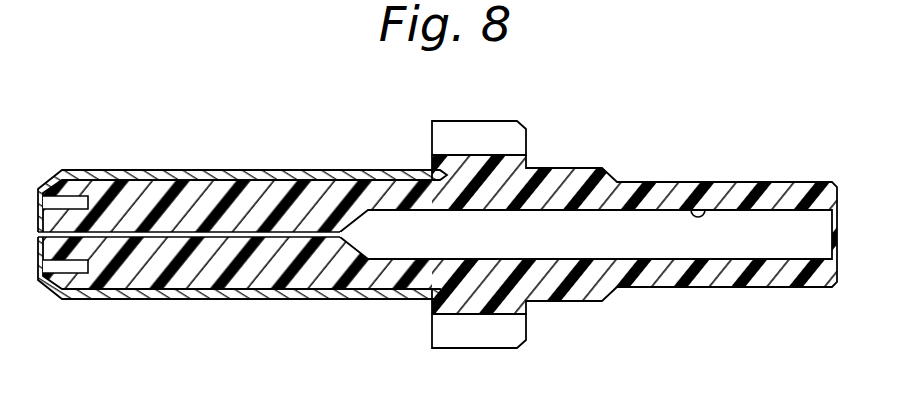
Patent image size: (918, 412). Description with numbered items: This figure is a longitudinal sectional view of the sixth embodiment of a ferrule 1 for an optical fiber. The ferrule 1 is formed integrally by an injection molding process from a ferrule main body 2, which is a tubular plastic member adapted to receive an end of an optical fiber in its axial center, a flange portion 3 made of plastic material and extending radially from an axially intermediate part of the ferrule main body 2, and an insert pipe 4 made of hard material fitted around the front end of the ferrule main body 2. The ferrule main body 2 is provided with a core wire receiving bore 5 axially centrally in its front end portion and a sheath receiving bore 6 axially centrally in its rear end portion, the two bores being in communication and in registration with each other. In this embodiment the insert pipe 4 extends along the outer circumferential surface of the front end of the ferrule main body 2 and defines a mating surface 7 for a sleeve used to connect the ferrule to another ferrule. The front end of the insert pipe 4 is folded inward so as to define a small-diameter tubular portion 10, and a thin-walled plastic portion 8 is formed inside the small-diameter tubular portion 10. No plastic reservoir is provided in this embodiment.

The ferrule 1 is at (437, 234).
The ferrule main body 2 is at (678, 289).
The flange portion 3 is at (510, 303).
The insert pipe 4 is at (258, 171).
The core wire receiving bore 5 is at (278, 231).
The sheath receiving bore 6 is at (717, 209).
The mating surface 7 is at (307, 170).
The thin-walled plastic portion 8 is at (72, 258).
The small-diameter tubular portion 10 is at (79, 203).